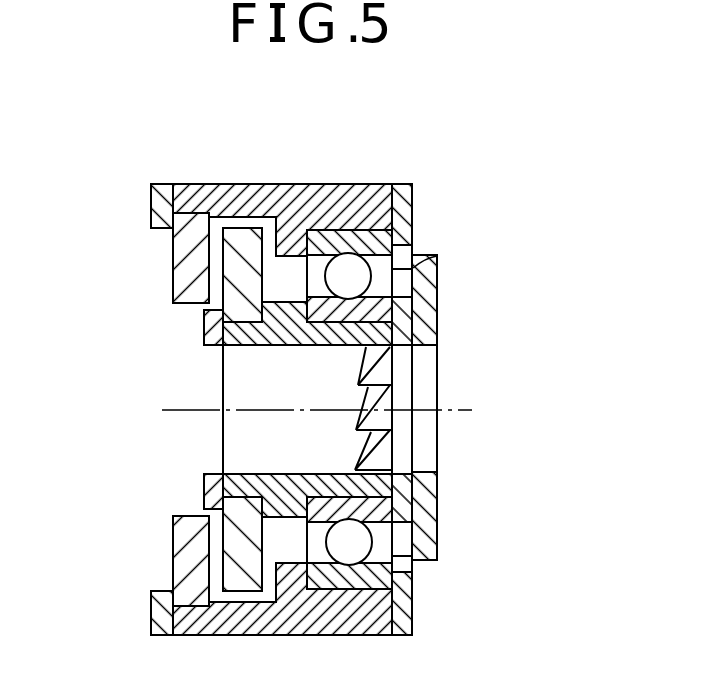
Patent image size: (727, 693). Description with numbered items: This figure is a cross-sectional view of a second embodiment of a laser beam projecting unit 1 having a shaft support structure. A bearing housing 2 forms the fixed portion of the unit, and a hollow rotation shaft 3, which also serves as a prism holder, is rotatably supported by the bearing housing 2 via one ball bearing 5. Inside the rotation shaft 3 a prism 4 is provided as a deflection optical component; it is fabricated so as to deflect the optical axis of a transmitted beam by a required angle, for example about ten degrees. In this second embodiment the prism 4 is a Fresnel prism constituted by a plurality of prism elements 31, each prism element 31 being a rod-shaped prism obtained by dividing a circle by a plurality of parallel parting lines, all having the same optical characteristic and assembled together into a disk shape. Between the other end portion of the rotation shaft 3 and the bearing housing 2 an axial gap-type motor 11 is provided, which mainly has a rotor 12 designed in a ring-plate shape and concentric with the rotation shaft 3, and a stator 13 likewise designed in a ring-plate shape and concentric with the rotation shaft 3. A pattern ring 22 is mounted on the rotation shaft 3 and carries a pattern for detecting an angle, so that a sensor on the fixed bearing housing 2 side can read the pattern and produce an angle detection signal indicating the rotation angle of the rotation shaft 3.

The laser beam projecting unit 1 is at (340, 183).
The bearing housing 2 is at (270, 184).
The axial gap-type motor 11 is at (210, 184).
The rotor 12 is at (248, 228).
The stator 13 is at (172, 290).
The rotation shaft 3 is at (262, 472).
The prism element 31 is at (357, 365).
The pattern ring 22 is at (438, 288).
The ball bearing 5 is at (437, 257).
The prism 4 is at (413, 372).